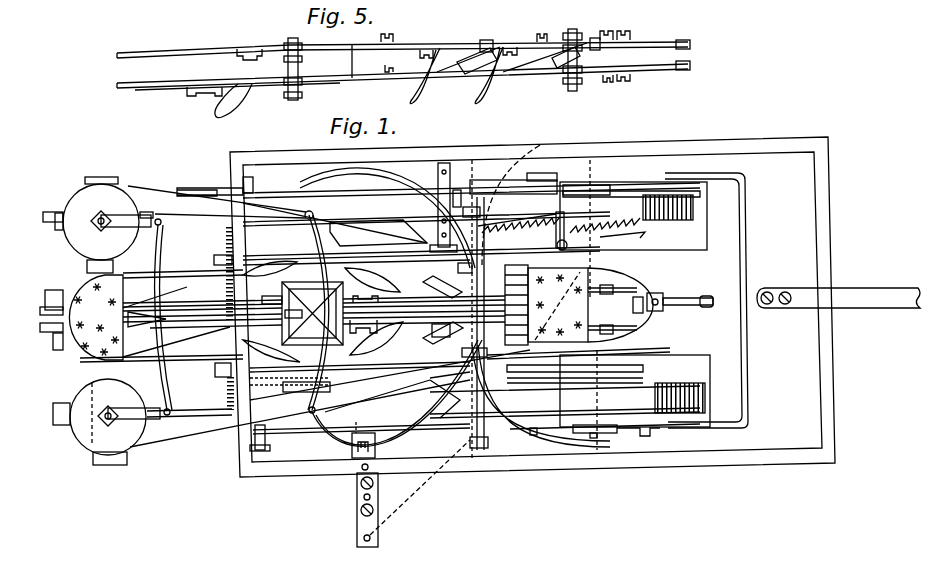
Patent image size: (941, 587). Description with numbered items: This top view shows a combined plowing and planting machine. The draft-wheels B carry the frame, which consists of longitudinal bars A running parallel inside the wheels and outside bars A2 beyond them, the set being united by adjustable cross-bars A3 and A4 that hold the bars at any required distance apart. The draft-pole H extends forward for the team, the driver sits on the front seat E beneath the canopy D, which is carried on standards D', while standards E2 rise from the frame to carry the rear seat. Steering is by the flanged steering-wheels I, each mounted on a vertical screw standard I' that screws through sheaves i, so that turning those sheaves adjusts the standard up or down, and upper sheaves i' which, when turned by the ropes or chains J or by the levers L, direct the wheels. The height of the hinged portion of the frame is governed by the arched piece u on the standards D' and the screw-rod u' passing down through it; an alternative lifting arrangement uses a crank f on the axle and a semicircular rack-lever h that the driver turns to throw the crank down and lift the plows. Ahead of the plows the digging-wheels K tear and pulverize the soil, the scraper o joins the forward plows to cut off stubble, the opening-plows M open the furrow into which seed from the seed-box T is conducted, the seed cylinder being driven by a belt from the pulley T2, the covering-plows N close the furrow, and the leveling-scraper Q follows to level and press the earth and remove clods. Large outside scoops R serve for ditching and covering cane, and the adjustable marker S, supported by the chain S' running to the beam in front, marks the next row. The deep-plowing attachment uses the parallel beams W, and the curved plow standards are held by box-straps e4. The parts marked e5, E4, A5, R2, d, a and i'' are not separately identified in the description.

In FIG. 5, the beam W is at (403, 60).
In FIG. 5, the box-straps e4 is at (356, 82).
In FIG. 1, the box-straps e4 is at (365, 294).
In FIG. 1, the clip e5 is at (363, 332).
In FIG. 1, the canopy D is at (524, 304).
In FIG. 1, the standards D' is at (445, 337).
In FIG. 1, the steering-wheels I is at (93, 316).
In FIG. 1, the vertical screw standards I' is at (133, 330).
In FIG. 1, the hub i'' is at (104, 318).
In FIG. 1, the sheaves i is at (290, 345).
In FIG. 1, the upper sheaves i' is at (312, 313).
In FIG. 1, the digging-wheels K is at (110, 466).
In FIG. 1, the levers L is at (378, 314).
In FIG. 1, the front driver's seat E is at (346, 314).
In FIG. 1, the standards E2 is at (183, 267).
In FIG. 1, the bar E4 is at (161, 366).
In FIG. 1, the longitudinal bars A is at (314, 315).
In FIG. 1, the outside longitudinal bars A2 is at (268, 442).
In FIG. 1, the cross-bar A3 is at (455, 300).
In FIG. 1, the cross-bar A4 is at (210, 299).
In FIG. 1, the bracket A5 is at (616, 437).
In FIG. 1, the leveling-scraper Q is at (176, 322).
In FIG. 1, the outside scoops R is at (346, 307).
In FIG. 1, the bar R2 is at (566, 379).
In FIG. 1, the ropes or chains J is at (443, 274).
In FIG. 1, the seed-box T is at (312, 313).
In FIG. 1, the pulley T2 is at (576, 366).
In FIG. 1, the covering-plows N is at (271, 301).
In FIG. 1, the opening-plows M is at (404, 311).
In FIG. 1, the block d is at (459, 267).
In FIG. 1, the block a is at (478, 355).
In FIG. 1, the draft-wheels B is at (635, 304).
In FIG. 1, the rack-lever h is at (570, 229).
In FIG. 1, the crank f is at (527, 227).
In FIG. 1, the scraper o is at (512, 305).
In FIG. 1, the arched piece u is at (612, 306).
In FIG. 1, the screw-rod u' is at (673, 297).
In FIG. 1, the draft-pole H is at (838, 298).
In FIG. 1, the adjustable marker S is at (360, 510).
In FIG. 1, the chain S' is at (404, 472).